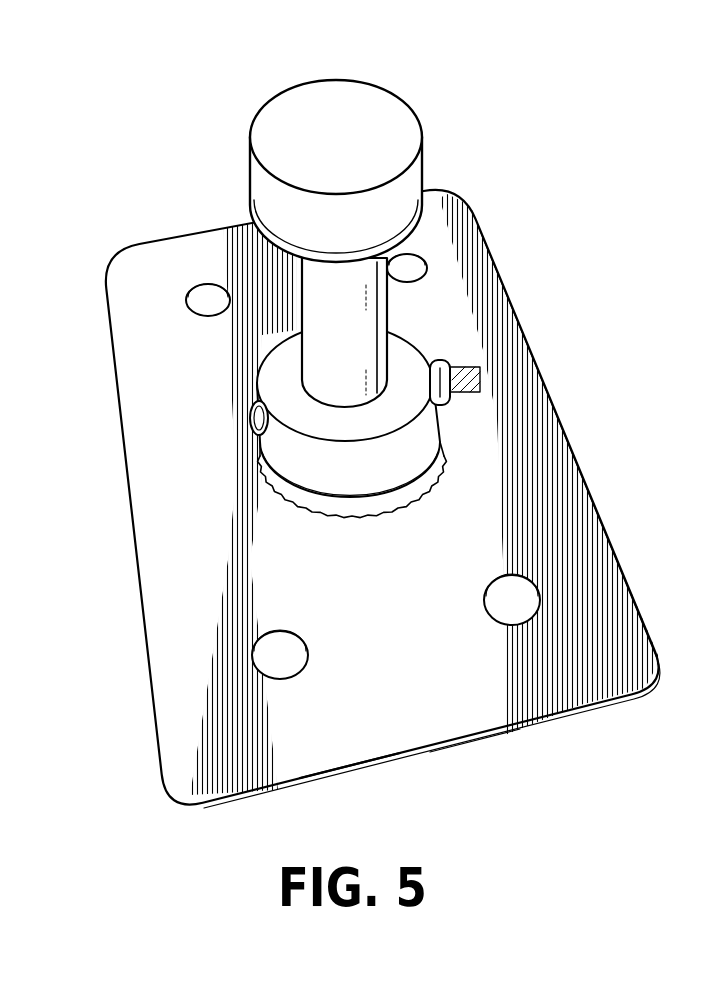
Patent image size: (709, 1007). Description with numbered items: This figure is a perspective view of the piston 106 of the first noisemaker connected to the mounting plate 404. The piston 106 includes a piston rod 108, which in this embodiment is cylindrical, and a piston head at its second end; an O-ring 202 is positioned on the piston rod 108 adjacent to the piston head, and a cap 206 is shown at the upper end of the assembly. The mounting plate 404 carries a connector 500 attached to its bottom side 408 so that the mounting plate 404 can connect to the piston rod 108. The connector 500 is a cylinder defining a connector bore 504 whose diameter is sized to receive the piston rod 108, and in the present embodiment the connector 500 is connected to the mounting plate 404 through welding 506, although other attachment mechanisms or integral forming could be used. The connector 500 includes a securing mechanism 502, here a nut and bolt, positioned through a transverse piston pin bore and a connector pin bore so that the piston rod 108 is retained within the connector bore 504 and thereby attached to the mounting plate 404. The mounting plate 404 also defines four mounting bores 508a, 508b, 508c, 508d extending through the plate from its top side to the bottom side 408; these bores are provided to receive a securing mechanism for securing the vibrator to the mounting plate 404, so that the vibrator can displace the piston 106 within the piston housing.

The piston 106 is at (375, 325).
The piston rod 108 is at (317, 338).
The O-ring 202 is at (440, 192).
The cap 206 is at (392, 117).
The mounting plate 404 is at (392, 735).
The bottom side 408 is at (483, 712).
The connector 500 is at (440, 430).
The securing mechanism 502 is at (455, 374).
The connector bore 504 is at (264, 428).
The welding 506 is at (430, 490).
The mounting bore 508a is at (533, 583).
The mounting bore 508b is at (255, 650).
The mounting bore 508c is at (205, 283).
The mounting bore 508d is at (421, 267).